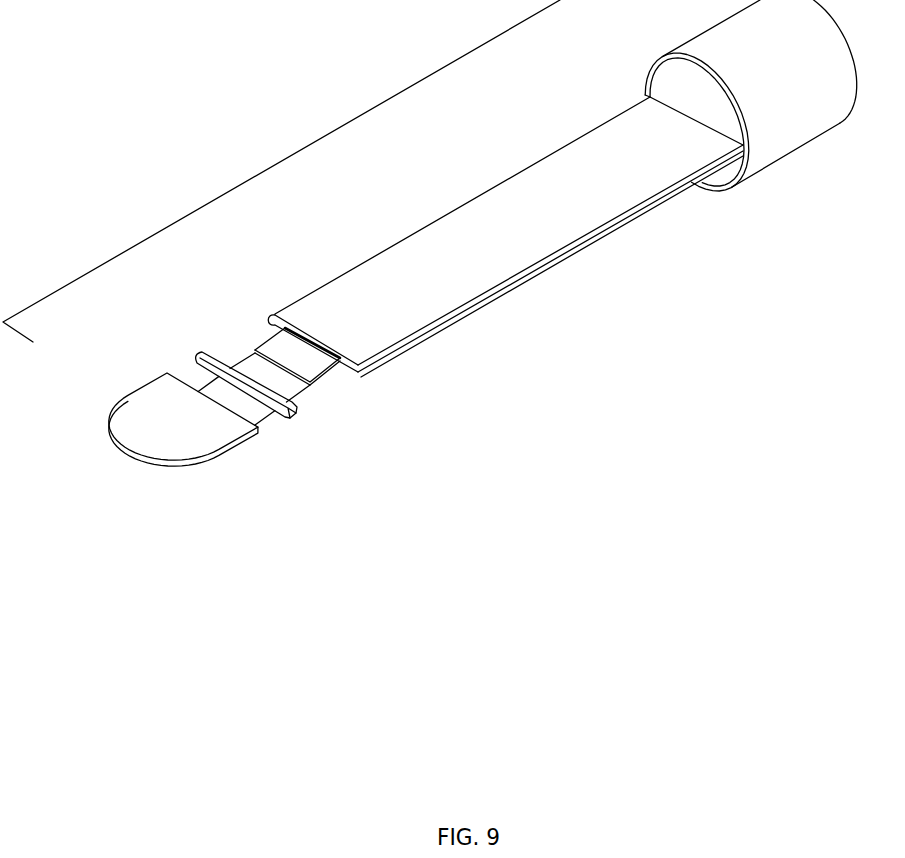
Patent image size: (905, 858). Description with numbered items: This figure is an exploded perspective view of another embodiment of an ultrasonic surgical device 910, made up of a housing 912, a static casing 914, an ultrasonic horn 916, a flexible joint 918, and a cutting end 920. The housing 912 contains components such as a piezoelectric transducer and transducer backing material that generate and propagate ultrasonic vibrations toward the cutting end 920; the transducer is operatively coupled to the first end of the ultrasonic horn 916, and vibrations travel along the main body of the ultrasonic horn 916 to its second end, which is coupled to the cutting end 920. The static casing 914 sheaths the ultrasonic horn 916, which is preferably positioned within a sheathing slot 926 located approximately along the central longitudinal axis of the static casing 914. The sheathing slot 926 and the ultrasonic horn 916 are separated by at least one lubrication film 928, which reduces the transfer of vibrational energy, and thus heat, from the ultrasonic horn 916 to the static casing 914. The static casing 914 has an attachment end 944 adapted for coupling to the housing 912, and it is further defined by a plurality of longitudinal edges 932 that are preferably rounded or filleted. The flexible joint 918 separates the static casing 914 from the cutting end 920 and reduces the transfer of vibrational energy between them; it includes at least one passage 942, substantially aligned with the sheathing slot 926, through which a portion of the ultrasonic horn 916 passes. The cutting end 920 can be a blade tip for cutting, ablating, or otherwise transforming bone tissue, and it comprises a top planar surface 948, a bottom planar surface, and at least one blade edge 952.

The ultrasonic surgical device 910 is at (358, 68).
The housing 912 is at (713, 53).
The static casing 914 is at (520, 192).
The attachment end 944 is at (723, 175).
The longitudinal edges 932 is at (480, 305).
The flexible joint 918 is at (275, 363).
The sheathing slot 926 is at (288, 330).
The lubrication film 928 is at (303, 362).
The ultrasonic horn 916 is at (263, 367).
The passage 942 is at (200, 355).
The cutting end 920 is at (163, 437).
The top planar surface 948 is at (163, 415).
The blade edge 952 is at (195, 462).